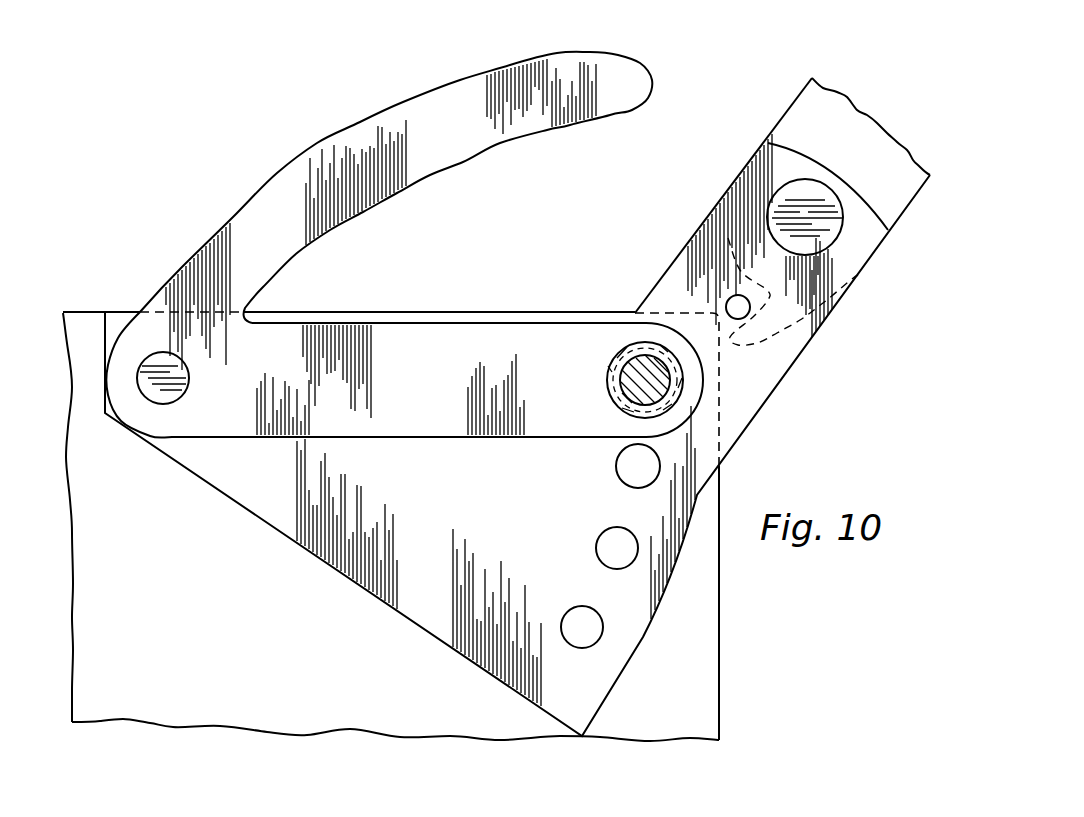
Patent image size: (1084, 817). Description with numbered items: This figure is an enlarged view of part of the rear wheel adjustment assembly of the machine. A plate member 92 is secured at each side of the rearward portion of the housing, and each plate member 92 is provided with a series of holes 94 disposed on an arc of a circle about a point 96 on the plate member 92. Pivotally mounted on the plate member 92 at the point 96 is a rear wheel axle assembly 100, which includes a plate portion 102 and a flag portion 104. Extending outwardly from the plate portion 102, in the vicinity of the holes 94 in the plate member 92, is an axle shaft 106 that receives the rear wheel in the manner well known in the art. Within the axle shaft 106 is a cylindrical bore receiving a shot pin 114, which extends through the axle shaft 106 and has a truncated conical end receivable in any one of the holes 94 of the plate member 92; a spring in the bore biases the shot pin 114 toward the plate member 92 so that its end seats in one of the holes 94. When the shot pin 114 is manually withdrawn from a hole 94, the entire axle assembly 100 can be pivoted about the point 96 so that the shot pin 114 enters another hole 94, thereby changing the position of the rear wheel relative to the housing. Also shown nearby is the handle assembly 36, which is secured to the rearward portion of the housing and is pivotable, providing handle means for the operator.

The handle assembly 36 is at (795, 87).
The plate member 92 is at (435, 619).
The holes 94 is at (599, 560).
The point 96 is at (170, 392).
The rear wheel axle assembly 100 is at (405, 272).
The plate portion 102 is at (442, 350).
The flag portion 104 is at (481, 140).
The axle shaft 106 is at (626, 404).
The shot pin 114 is at (632, 360).